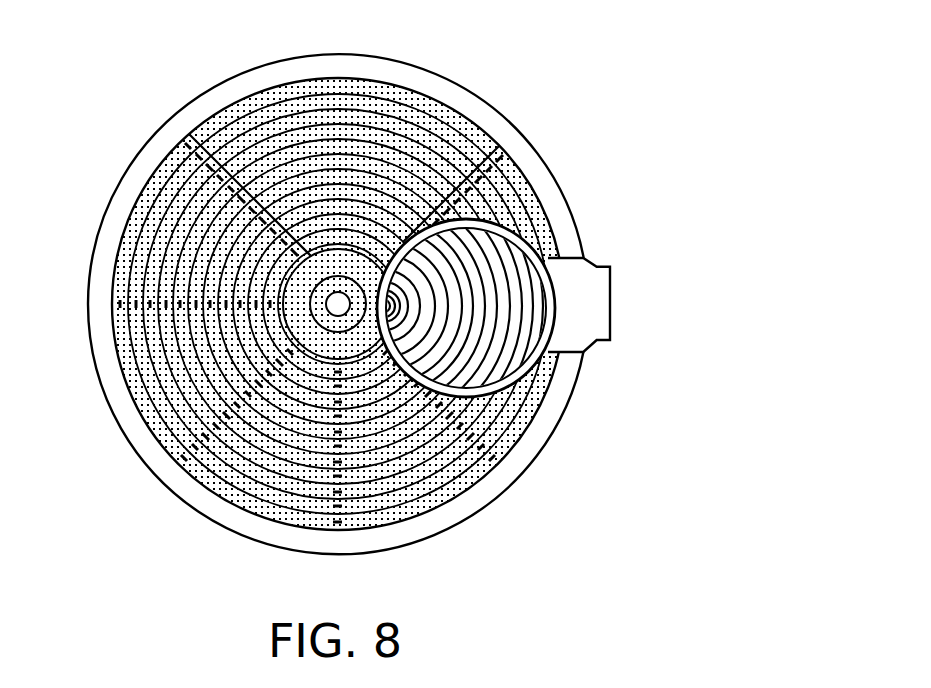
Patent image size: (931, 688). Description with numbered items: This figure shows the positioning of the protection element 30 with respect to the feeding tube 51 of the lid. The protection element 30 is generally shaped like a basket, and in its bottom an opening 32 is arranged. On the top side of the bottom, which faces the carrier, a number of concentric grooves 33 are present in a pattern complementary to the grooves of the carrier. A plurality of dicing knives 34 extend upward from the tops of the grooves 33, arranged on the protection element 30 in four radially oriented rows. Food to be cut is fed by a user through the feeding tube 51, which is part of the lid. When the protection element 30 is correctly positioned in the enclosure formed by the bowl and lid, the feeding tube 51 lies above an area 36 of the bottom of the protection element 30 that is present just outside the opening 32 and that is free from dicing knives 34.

The protection element 30 is at (130, 389).
The opening 32 is at (442, 137).
The concentric grooves 33 is at (177, 203).
The dicing knives 34 is at (157, 298).
The area 36 is at (408, 480).
The feeding tube 51 is at (510, 226).